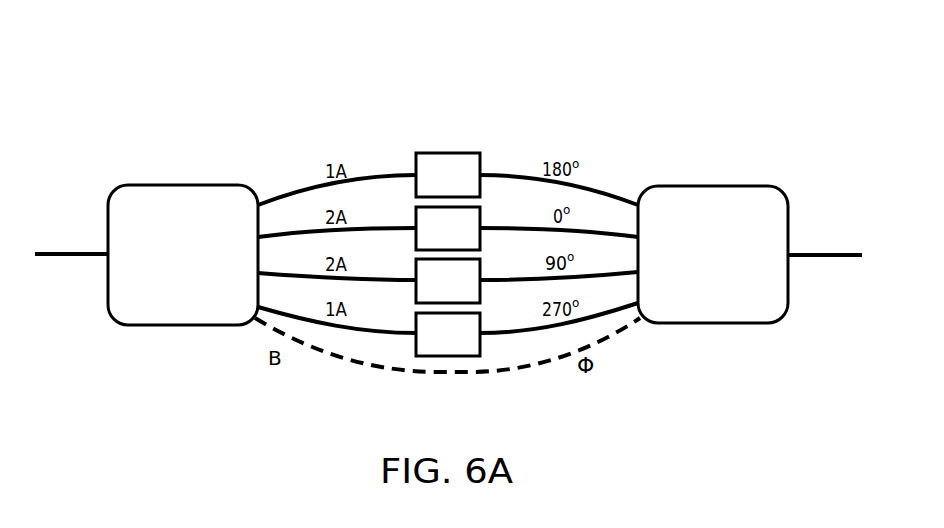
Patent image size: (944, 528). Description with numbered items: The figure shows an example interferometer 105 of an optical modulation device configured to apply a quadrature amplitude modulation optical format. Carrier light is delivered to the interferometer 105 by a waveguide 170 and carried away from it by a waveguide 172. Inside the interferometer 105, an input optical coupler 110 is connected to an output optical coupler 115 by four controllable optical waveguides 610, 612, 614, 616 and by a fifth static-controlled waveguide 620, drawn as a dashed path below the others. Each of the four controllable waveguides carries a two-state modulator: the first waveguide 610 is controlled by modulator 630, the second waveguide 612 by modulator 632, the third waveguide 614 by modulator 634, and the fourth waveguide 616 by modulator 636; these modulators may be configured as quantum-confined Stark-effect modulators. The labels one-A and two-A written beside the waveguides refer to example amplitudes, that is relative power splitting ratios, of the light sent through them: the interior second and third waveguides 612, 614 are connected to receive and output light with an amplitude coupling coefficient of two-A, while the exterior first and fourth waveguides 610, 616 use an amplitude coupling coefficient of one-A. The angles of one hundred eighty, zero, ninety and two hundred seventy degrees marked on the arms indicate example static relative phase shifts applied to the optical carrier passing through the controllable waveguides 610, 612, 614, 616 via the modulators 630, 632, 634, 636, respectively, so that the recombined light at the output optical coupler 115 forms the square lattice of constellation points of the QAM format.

The interferometer 105 is at (288, 116).
The input optical coupler 110 is at (203, 272).
The output optical coupler 115 is at (735, 272).
The waveguide 170 is at (70, 257).
The waveguide 172 is at (825, 258).
The first controllable optical waveguide 610 is at (606, 197).
The second controllable optical waveguide 612 is at (503, 224).
The third controllable optical waveguide 614 is at (505, 283).
The fourth controllable optical waveguide 616 is at (607, 316).
The static-controlled waveguide 620 is at (350, 364).
The two-state modulator 630 is at (448, 153).
The two-state modulator 632 is at (417, 220).
The two-state modulator 634 is at (417, 292).
The two-state modulator 636 is at (448, 357).